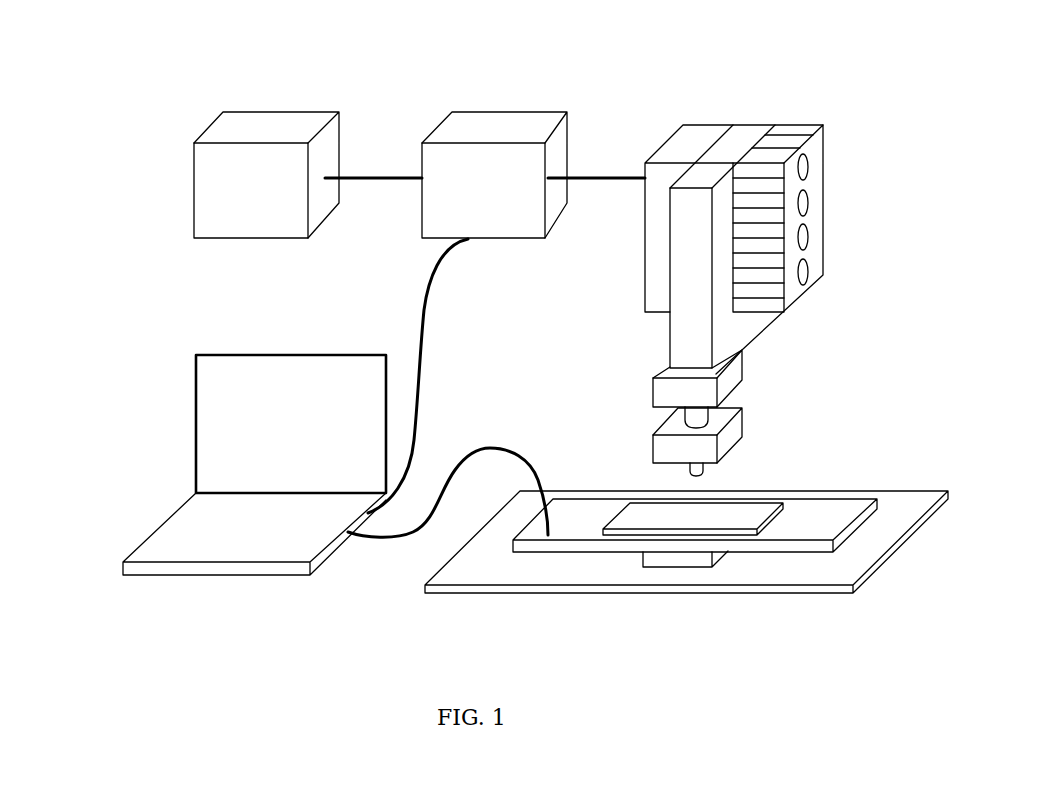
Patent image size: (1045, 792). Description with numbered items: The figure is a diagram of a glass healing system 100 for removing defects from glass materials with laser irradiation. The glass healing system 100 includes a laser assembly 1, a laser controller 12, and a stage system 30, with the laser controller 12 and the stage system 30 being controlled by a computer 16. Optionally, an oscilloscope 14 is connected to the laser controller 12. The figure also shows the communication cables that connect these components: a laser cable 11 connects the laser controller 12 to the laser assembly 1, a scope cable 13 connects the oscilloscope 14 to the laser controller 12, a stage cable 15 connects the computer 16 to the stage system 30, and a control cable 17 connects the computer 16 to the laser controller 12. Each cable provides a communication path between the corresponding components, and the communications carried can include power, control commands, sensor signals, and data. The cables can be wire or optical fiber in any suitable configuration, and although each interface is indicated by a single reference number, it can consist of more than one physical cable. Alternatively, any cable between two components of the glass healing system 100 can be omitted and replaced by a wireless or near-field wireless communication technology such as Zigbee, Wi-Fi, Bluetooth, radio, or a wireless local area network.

The glass healing system 100 is at (104, 174).
The laser assembly 1 is at (697, 135).
The laser cable 11 is at (612, 178).
The laser controller 12 is at (507, 130).
The scope cable 13 is at (395, 178).
The oscilloscope 14 is at (272, 135).
The stage cable 15 is at (498, 448).
The computer 16 is at (184, 516).
The control cable 17 is at (423, 310).
The stage system 30 is at (595, 513).